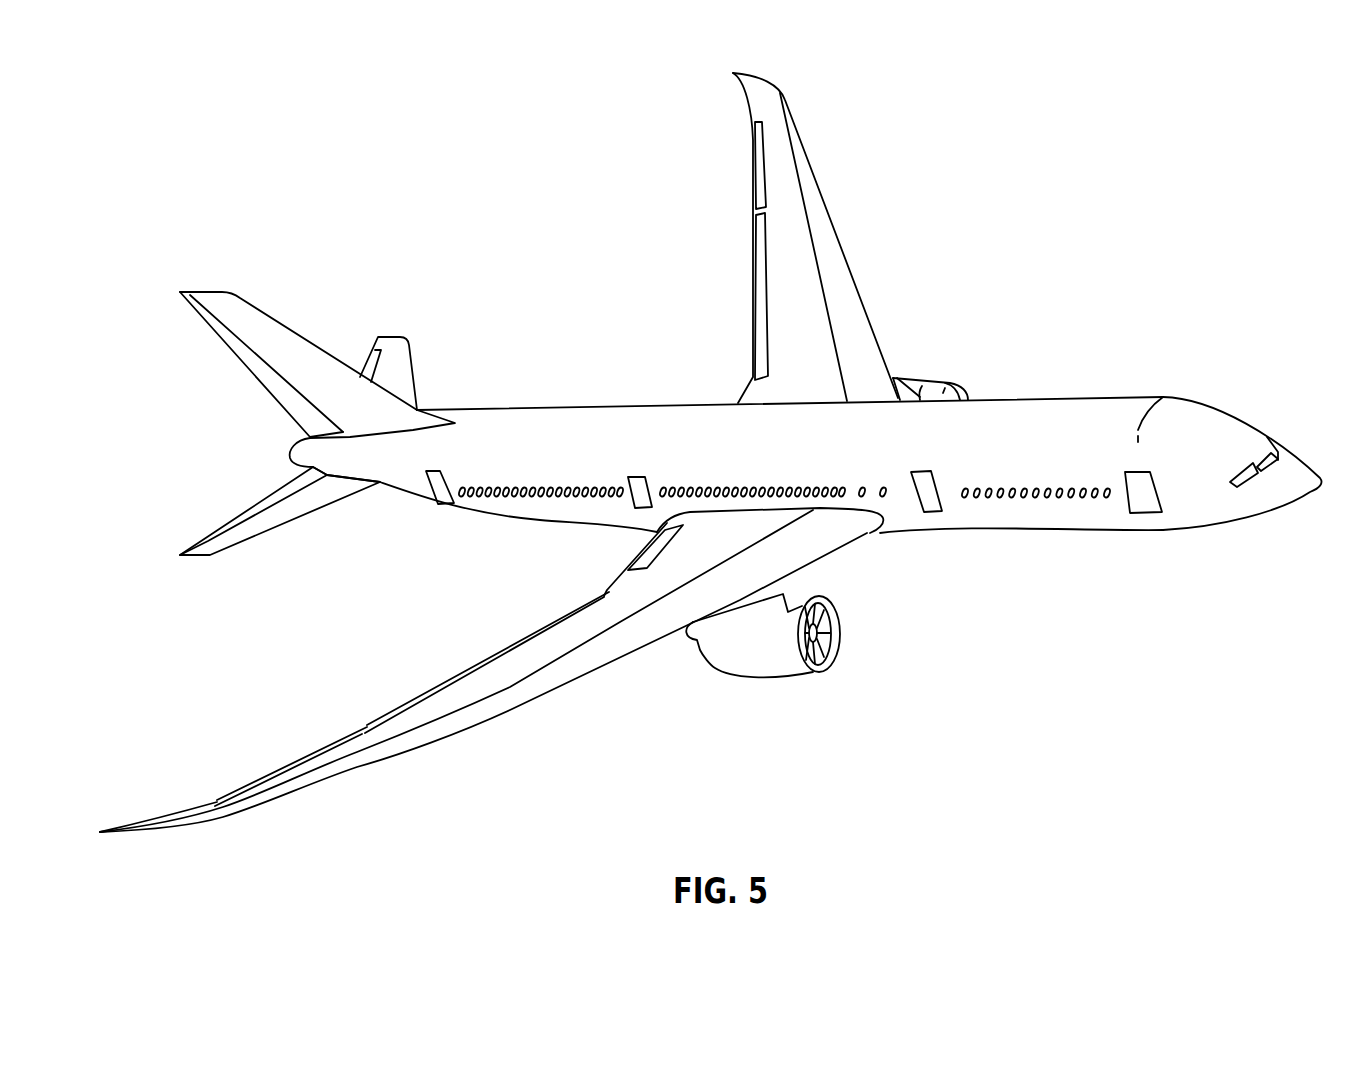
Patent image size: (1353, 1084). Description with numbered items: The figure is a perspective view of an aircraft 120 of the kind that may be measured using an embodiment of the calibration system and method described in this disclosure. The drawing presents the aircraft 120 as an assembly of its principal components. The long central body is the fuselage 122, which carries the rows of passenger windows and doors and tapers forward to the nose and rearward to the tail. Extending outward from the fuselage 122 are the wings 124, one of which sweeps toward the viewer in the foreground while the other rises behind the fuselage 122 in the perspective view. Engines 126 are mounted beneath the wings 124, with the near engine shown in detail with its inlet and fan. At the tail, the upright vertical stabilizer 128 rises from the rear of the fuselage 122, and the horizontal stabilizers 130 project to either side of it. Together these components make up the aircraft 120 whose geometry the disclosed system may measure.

The aircraft 120 is at (1063, 194).
The fuselage 122 is at (1069, 410).
The wings 124 is at (817, 178).
The engines 126 is at (937, 383).
The vertical stabilizer 128 is at (280, 322).
The horizontal stabilizers 130 is at (398, 337).